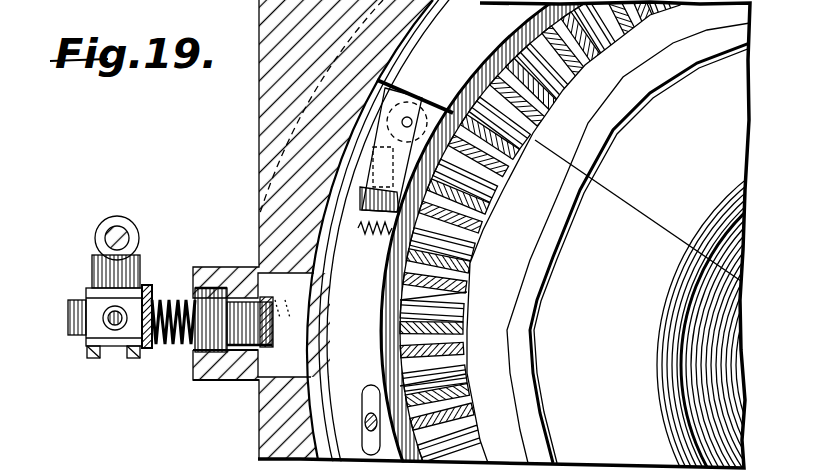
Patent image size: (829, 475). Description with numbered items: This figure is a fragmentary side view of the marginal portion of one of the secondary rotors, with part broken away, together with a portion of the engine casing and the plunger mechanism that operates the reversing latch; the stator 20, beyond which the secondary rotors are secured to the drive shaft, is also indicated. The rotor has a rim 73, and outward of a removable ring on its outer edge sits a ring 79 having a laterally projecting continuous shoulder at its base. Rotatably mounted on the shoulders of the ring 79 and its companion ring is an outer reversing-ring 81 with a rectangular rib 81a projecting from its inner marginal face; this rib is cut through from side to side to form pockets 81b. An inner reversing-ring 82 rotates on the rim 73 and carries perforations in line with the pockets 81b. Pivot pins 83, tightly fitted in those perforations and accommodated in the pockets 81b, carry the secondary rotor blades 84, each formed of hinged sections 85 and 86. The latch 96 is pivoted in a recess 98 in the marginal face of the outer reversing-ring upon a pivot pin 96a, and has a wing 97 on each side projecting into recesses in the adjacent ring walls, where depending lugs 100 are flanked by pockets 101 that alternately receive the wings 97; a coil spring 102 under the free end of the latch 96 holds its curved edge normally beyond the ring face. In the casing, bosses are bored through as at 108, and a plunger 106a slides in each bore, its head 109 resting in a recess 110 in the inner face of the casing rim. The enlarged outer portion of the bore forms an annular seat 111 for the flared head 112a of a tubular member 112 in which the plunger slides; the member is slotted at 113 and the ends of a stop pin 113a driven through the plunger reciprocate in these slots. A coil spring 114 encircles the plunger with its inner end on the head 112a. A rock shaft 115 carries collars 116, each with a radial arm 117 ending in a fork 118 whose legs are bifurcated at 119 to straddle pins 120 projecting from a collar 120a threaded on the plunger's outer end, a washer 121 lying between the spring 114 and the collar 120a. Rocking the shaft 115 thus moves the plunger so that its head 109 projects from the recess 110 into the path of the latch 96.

The stator 20 is at (756, 294).
The rim 73 is at (523, 305).
The ring 79 is at (74, 473).
The outer reversing-ring 81 is at (385, 250).
The rectangular rib 81a is at (392, 301).
The pockets 81b is at (395, 380).
The inner reversing-ring 82 is at (555, 207).
The pivot pins 83 is at (470, 250).
The secondary rotor blades 84 is at (457, 377).
The hinged section 85 is at (580, 75).
The hinged section 86 is at (467, 420).
The secondary rotor latch 96 is at (365, 178).
The pivot pin 96a is at (420, 110).
The wing 97 is at (360, 213).
The recess 98 is at (408, 93).
The depending lugs 100 is at (372, 116).
The pockets 101 is at (300, 115).
The coil spring 102 is at (310, 272).
The plungers 106a is at (72, 318).
The bores 108 is at (188, 353).
The head 109 is at (300, 331).
The recess 110 is at (267, 403).
The annular seats 111 is at (220, 373).
The tubular members 112 is at (245, 290).
The flared heads 112a is at (247, 270).
The slots 113 is at (253, 370).
The stop pins 113a is at (240, 363).
The coil spring 114 is at (157, 297).
The rock shaft 115 is at (113, 233).
The collars 116 is at (140, 227).
The radial arm 117 is at (93, 275).
The fork 118 is at (100, 362).
The bifurcation 119 is at (122, 358).
The pins 120 is at (88, 337).
The collars 120a is at (112, 350).
The washer 121 is at (147, 283).